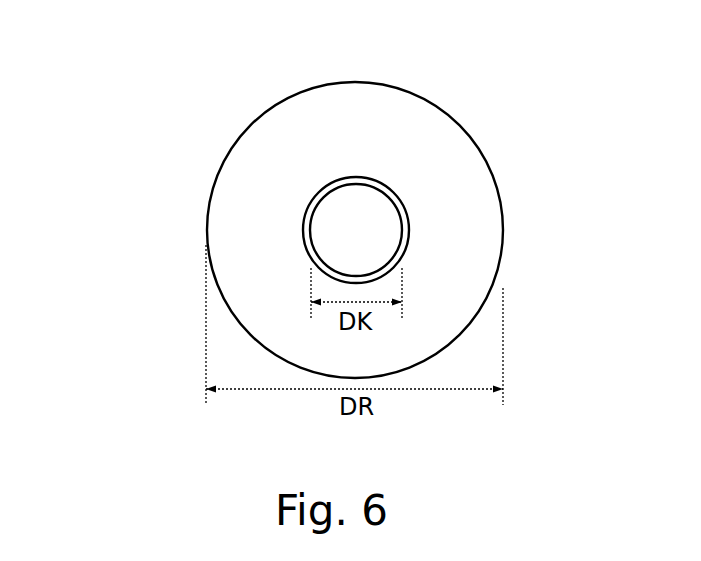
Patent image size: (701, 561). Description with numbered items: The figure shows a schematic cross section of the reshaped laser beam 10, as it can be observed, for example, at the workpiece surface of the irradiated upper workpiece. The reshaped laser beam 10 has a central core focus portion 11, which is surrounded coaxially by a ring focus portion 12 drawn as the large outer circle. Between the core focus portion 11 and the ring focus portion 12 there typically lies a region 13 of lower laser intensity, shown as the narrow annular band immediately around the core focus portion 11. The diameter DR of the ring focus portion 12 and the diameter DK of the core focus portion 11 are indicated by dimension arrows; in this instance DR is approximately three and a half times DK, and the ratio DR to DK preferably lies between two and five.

The reshaped laser beam 10 is at (186, 122).
The core focus portion 11 is at (380, 220).
The ring focus portion 12 is at (428, 158).
The region with lower laser intensity 13 is at (343, 177).